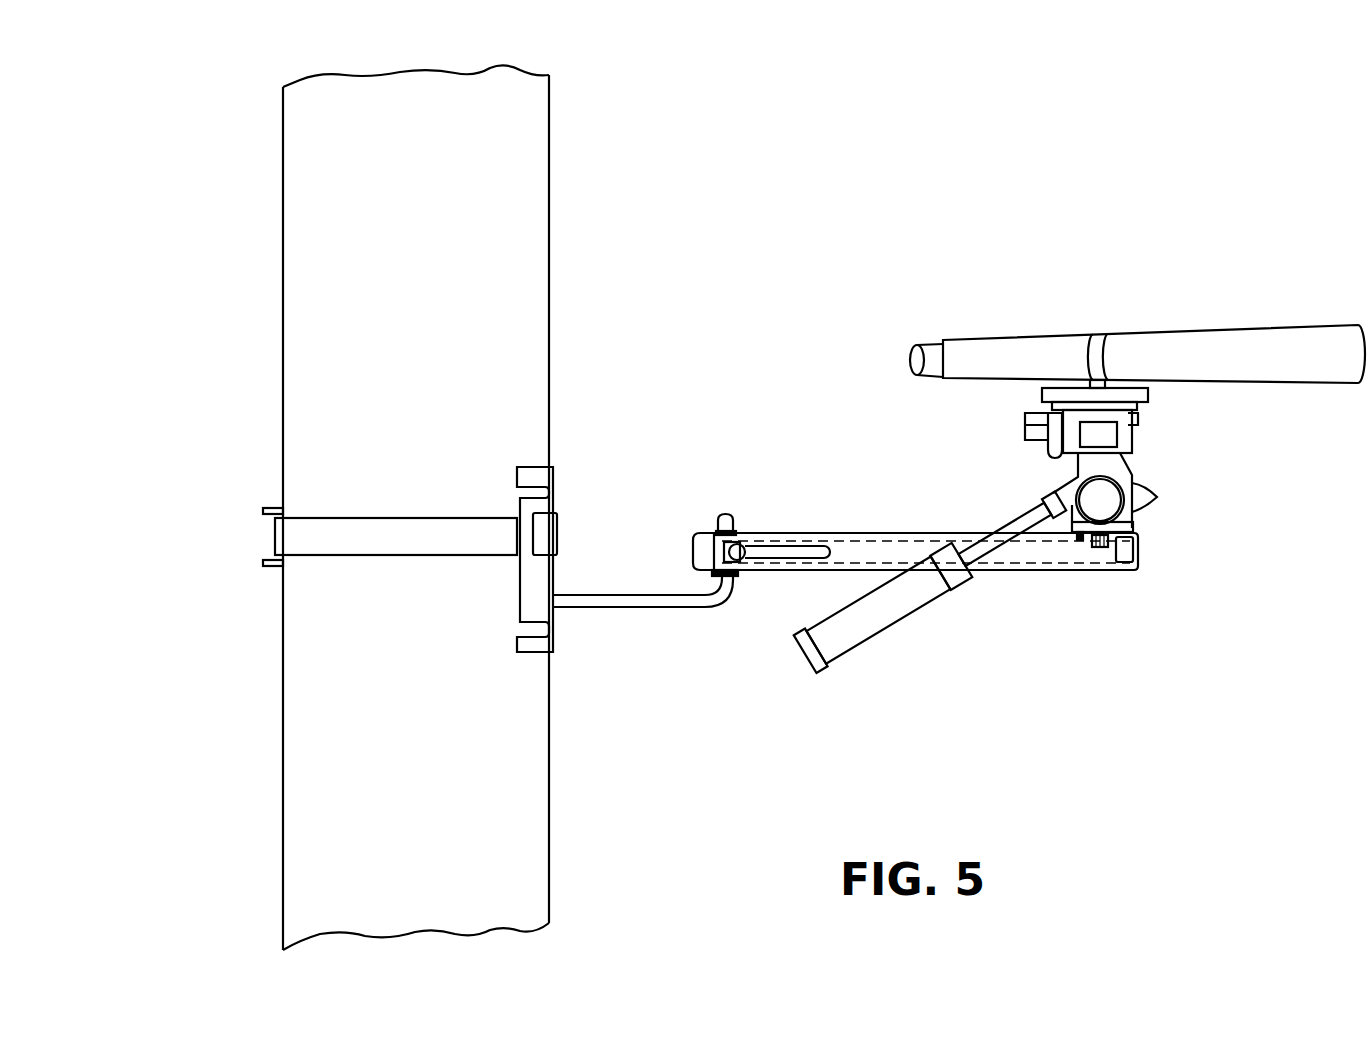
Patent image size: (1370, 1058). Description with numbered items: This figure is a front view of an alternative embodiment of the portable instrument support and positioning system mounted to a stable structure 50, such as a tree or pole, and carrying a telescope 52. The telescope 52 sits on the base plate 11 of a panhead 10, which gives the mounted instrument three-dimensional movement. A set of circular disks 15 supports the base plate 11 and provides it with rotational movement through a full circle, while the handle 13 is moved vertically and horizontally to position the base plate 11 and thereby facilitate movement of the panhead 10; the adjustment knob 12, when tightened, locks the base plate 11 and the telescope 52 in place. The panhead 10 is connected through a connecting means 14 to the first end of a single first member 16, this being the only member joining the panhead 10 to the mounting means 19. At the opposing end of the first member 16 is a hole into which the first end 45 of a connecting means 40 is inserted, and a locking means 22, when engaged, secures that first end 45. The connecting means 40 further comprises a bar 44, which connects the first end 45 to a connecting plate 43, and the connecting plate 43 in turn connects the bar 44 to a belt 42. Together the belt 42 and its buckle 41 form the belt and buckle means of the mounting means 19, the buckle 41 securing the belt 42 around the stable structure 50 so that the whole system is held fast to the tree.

The panhead 10 is at (1159, 465).
The base plate 11 is at (1140, 403).
The adjustment knob 12 is at (1153, 500).
The handle 13 is at (893, 608).
The connecting means 14 is at (1097, 547).
The set of circular disks 15 is at (1062, 517).
The first member 16 is at (900, 535).
The mounting means 19 is at (431, 513).
The locking means 22 is at (787, 548).
The connecting means 40 is at (645, 625).
The buckle 41 is at (268, 507).
The belt 42 is at (385, 528).
The connecting plate 43 is at (528, 473).
The bar 44 is at (632, 593).
The first end 45 is at (727, 512).
The stable structure 50 is at (550, 213).
The telescope 52 is at (1212, 322).